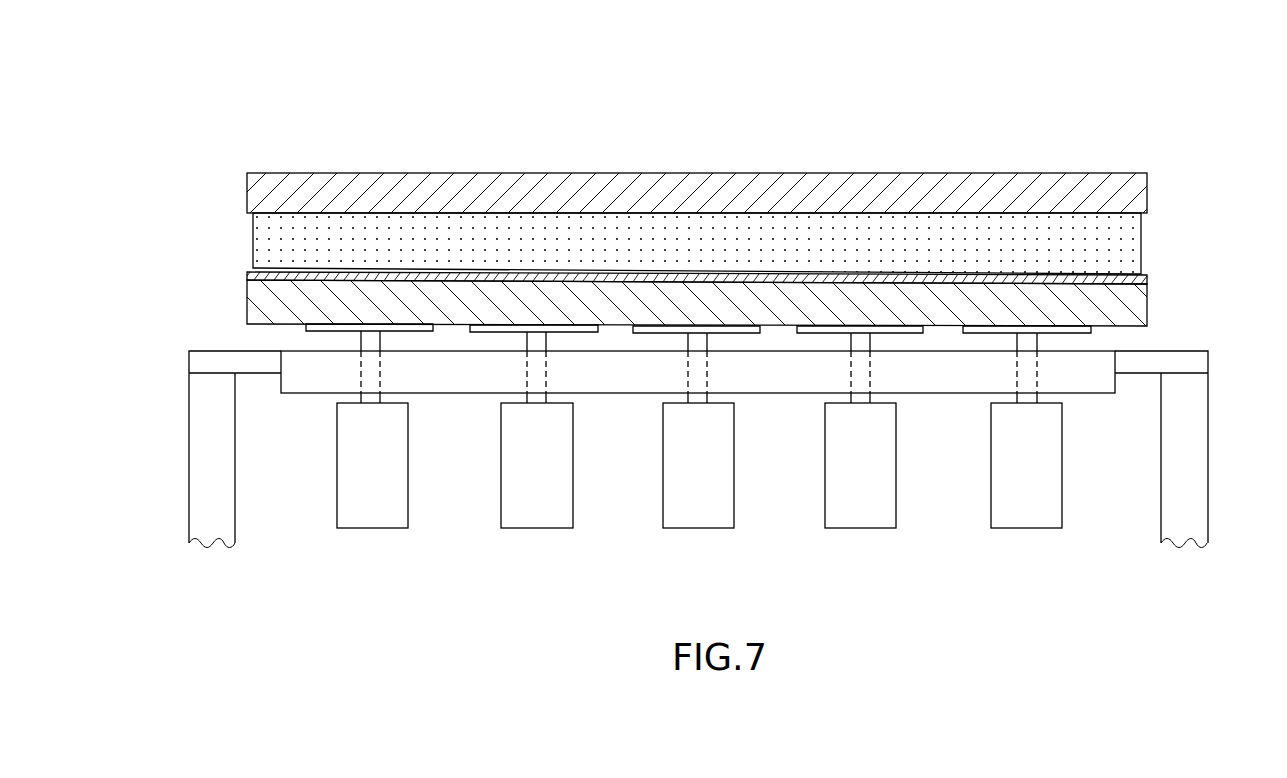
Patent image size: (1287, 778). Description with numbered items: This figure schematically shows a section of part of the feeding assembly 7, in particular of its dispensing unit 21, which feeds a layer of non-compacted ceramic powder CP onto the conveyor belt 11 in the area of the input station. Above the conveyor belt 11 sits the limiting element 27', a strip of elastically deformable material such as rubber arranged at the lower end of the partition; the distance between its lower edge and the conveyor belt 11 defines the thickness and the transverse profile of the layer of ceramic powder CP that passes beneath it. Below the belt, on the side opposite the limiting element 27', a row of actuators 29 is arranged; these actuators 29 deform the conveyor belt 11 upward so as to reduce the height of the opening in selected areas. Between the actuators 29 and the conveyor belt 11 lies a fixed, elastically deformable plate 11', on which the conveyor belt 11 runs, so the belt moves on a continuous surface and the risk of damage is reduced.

The feeding assembly 7 is at (870, 140).
The dispensing unit 21 is at (746, 155).
The limiting element 27' is at (737, 169).
The ceramic powder CP is at (1143, 265).
The plate 11' is at (646, 283).
The conveyor belt 11 is at (753, 302).
The actuator 29 is at (400, 515).